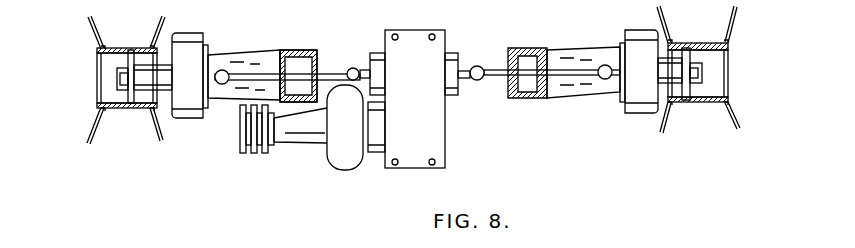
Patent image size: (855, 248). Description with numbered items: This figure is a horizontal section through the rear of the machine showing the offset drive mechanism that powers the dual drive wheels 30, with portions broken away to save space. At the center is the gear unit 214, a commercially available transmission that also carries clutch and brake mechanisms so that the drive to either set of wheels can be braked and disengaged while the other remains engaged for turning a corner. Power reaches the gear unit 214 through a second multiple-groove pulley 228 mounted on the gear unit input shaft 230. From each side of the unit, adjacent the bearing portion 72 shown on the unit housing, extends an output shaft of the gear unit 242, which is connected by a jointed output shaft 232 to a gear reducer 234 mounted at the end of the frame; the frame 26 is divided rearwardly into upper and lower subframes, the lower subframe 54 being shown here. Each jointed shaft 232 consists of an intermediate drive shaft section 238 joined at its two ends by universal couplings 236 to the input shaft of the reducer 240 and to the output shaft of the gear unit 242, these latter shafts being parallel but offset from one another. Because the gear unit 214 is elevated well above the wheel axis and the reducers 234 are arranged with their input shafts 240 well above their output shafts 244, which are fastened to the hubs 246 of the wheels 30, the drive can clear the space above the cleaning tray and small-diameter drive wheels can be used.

The frame 26 is at (529, 44).
The drive wheels 30 is at (160, 138).
The lower subframe 54 is at (311, 45).
The bearing hub 72 is at (452, 44).
The gear unit 214 is at (412, 53).
The second multiple-groove pulley 228 is at (265, 157).
The gear unit input shaft 230 is at (282, 138).
The jointed output shafts 232 is at (562, 45).
The gear reducers 234 is at (185, 43).
The universal couplings 236 is at (347, 69).
The intermediate drive shaft section 238 is at (244, 68).
The input shaft of the reducer 240 is at (208, 64).
The output shaft of the gear unit 242 is at (358, 70).
The output shafts 244 is at (122, 78).
The hubs 246 is at (143, 46).